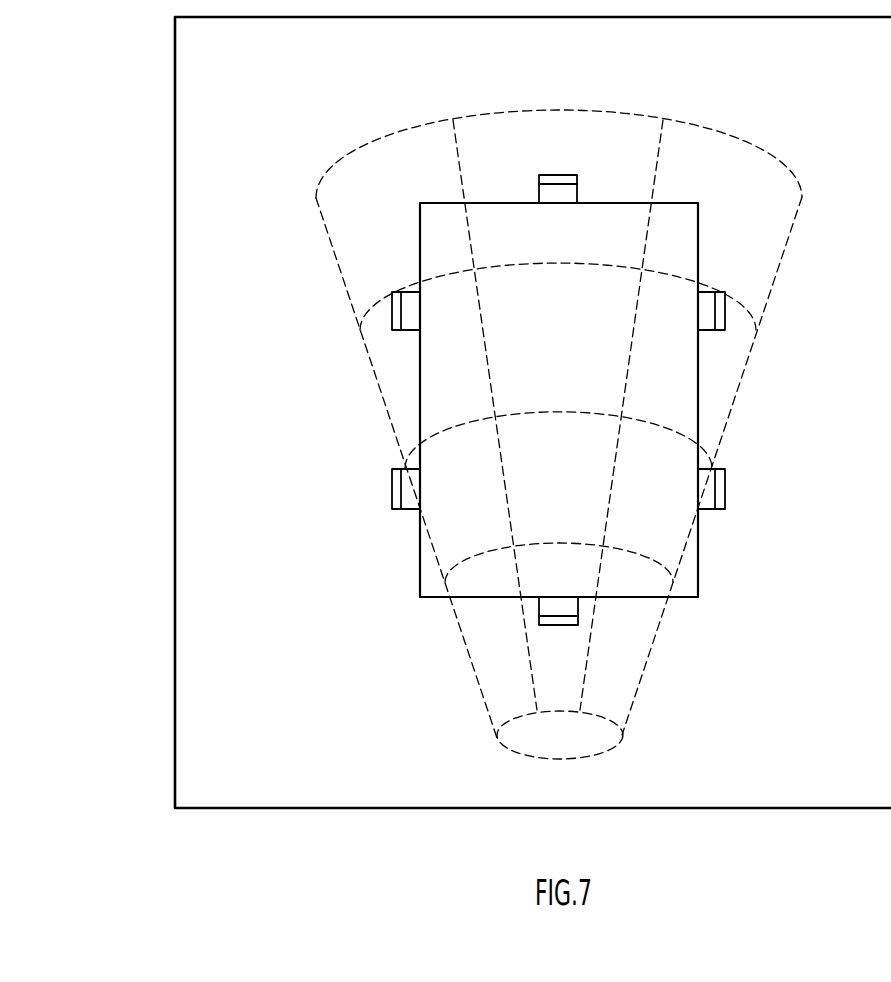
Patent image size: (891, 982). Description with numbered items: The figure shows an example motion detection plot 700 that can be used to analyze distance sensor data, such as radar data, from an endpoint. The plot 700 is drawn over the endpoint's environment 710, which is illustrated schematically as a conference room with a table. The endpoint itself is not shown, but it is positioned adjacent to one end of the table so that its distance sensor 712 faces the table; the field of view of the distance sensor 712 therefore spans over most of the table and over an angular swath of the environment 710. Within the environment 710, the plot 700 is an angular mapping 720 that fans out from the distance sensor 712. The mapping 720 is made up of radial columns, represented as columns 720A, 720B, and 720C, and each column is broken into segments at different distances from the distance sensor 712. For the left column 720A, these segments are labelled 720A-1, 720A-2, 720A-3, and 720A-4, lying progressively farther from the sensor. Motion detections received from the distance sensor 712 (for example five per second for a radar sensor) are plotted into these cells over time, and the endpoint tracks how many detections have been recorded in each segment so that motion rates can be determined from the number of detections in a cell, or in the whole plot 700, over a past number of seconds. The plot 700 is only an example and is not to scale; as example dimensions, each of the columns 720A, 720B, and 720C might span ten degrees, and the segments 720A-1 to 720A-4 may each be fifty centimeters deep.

The motion detection plot 700 is at (91, 76).
The environment 710 is at (844, 746).
The distance sensor 712 is at (525, 756).
The angular mapping 720 is at (340, 164).
The radial column 720A is at (409, 198).
The radial column 720B is at (574, 155).
The radial column 720C is at (759, 203).
The segment 720A-1 is at (360, 250).
The segment 720A-2 is at (391, 398).
The segment 720A-3 is at (443, 540).
The segment 720A-4 is at (488, 651).